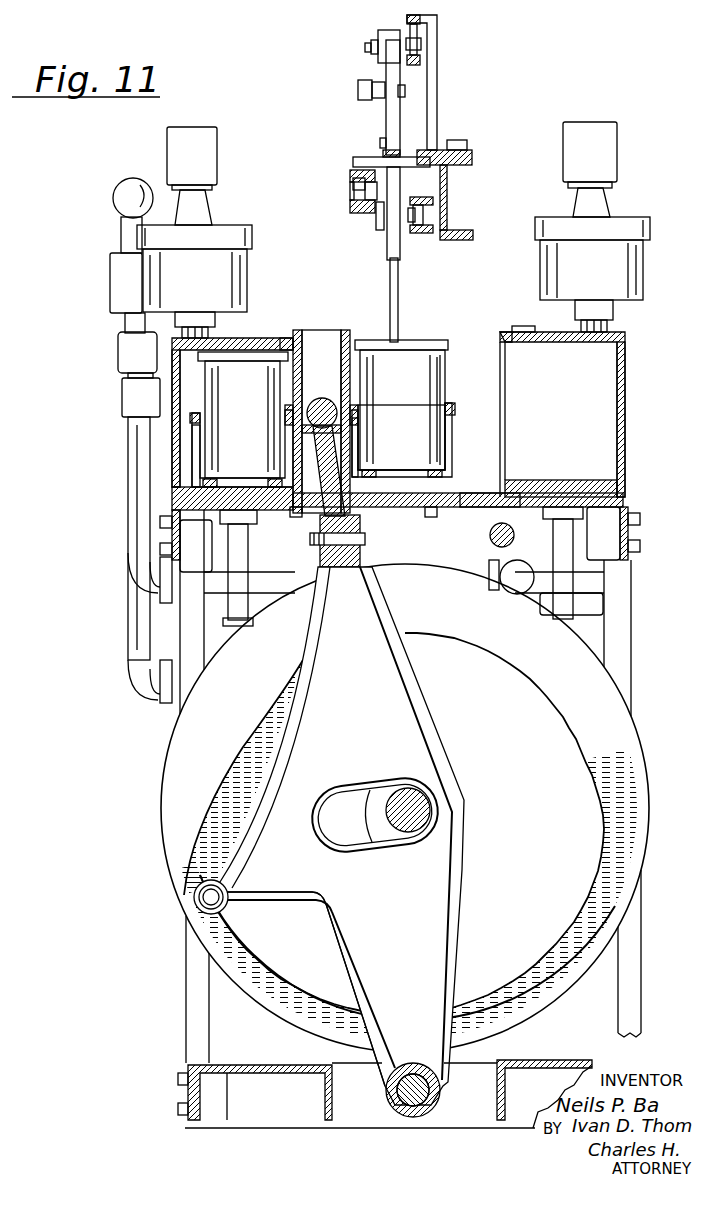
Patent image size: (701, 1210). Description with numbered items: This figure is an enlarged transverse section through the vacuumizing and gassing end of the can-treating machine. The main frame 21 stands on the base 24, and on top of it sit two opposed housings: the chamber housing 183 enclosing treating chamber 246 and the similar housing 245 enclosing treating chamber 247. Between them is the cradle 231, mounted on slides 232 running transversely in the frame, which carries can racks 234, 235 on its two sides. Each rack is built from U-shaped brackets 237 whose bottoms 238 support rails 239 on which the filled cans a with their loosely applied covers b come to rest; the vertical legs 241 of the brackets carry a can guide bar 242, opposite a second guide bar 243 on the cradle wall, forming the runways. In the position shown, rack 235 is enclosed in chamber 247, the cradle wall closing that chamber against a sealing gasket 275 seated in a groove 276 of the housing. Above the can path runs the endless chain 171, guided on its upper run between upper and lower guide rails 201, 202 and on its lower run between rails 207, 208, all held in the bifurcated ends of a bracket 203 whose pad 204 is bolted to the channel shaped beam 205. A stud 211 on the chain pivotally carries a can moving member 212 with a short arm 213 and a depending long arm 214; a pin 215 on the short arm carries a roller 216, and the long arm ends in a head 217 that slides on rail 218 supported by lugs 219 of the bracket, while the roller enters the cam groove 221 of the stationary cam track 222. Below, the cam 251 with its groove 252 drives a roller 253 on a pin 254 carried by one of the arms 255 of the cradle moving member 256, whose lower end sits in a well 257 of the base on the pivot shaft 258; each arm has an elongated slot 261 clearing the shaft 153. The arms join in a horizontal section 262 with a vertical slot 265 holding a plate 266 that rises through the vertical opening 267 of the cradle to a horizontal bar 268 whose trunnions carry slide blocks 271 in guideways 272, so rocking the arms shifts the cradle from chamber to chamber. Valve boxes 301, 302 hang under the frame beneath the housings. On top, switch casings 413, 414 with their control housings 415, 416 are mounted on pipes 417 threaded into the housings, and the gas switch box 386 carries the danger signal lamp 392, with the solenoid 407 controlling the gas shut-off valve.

The main frame 21 is at (630, 528).
The base 24 is at (278, 1074).
The shaft 153 is at (430, 812).
The endless chain 171 is at (421, 44).
The chamber housing 183 is at (626, 420).
The upper guide rail 201 is at (420, 27).
The lower guide rail 202 is at (420, 62).
The bracket 203 is at (437, 110).
The pad 204 is at (470, 155).
The channel shaped beam 205 is at (448, 177).
The upper guide rail 207 is at (434, 200).
The lower guide rail 208 is at (434, 228).
The stud 211 is at (365, 46).
The can moving member 212 is at (390, 32).
The short arm 213 is at (356, 213).
The long arm 214 is at (386, 118).
The pin 215 is at (358, 88).
The roller 216 is at (372, 98).
The head 217 is at (380, 143).
The rail 218 is at (396, 150).
The lug 219 is at (356, 163).
The cam groove 221 is at (351, 205).
The cam track 222 is at (366, 190).
The cradle 231 is at (344, 330).
The slide 232 is at (470, 494).
The can rack 234 is at (452, 400).
The can rack 235 is at (195, 437).
The U-shaped bracket 237 is at (294, 518).
The bottom 238 is at (172, 491).
The rail 239 is at (262, 478).
The vertical leg 241 is at (200, 447).
The can guide bar 242 is at (200, 416).
The guide bar 243 is at (285, 420).
The housing 245 is at (175, 396).
The treating chamber 246 is at (612, 376).
The treating chamber 247 is at (186, 376).
The cam 251 is at (644, 731).
The groove 252 is at (582, 763).
The roller 253 is at (194, 896).
The pin 254 is at (226, 893).
The arm 255 is at (462, 875).
The cradle moving member 256 is at (446, 915).
The well 257 is at (475, 1118).
The pivot shaft 258 is at (398, 1122).
The elongated slot 261 is at (346, 798).
The horizontally disposed section 262 is at (360, 555).
The vertical slot 265 is at (365, 539).
The plate 266 is at (328, 475).
The vertical opening 267 is at (318, 336).
The horizontal bar 268 is at (321, 398).
The slide block 271 is at (321, 387).
The guideway 272 is at (350, 345).
The sealing gasket 275 is at (287, 338).
The groove 276 is at (522, 321).
The valve box 301 is at (211, 664).
The valve box 302 is at (605, 631).
The switch box 386 is at (118, 283).
The danger signal lamp 392 is at (118, 190).
The solenoid 407 is at (118, 338).
The switch casing 413 is at (590, 155).
The switch casing 414 is at (192, 158).
The housing 415 is at (592, 254).
The housing 416 is at (194, 258).
The pipe 417 is at (210, 325).
The filled can a is at (440, 360).
The cover b is at (425, 340).